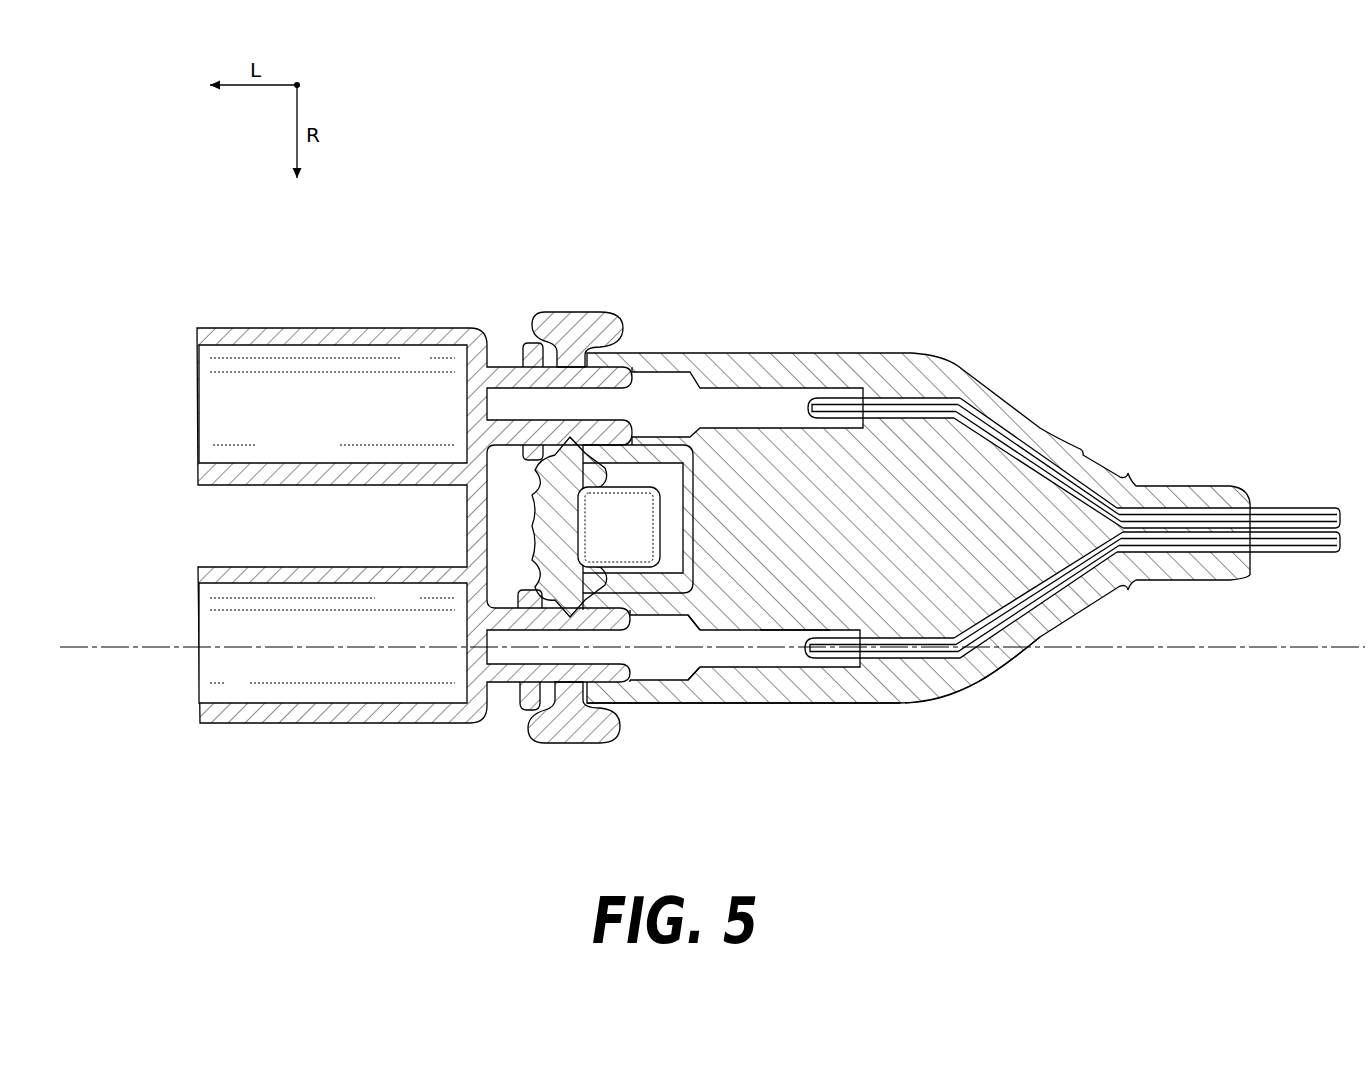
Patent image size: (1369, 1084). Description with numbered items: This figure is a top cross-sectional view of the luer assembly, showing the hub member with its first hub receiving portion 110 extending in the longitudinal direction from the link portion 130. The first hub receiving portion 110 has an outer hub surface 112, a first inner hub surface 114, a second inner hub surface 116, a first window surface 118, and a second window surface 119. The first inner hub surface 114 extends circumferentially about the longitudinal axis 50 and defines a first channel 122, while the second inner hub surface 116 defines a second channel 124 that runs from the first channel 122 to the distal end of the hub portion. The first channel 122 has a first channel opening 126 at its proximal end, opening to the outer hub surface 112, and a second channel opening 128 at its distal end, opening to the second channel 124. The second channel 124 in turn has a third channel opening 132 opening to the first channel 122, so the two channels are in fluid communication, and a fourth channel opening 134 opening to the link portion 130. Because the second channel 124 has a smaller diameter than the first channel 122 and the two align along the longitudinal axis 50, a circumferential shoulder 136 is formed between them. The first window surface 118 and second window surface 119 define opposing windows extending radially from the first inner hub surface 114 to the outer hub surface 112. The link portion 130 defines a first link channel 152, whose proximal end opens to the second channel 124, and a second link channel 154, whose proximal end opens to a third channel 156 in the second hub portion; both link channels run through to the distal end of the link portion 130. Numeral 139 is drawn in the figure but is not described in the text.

The longitudinal axis 50 is at (115, 642).
The first hub receiving portion 110 is at (801, 708).
The outer hub surface 112 is at (755, 705).
The first inner hub surface 114 is at (653, 682).
The second inner hub surface 116 is at (847, 667).
The first window surface 118 is at (522, 688).
The second window surface 119 is at (519, 600).
The first channel 122 is at (654, 632).
The second channel 124 is at (792, 636).
The first channel opening 126 is at (522, 706).
The second channel opening 128 is at (687, 625).
The link portion 130 is at (1018, 663).
The third channel opening 132 is at (700, 628).
The fourth channel opening 134 is at (862, 630).
The shoulder 136 is at (692, 664).
The valve member 139 is at (536, 585).
The first link channel 152 is at (1065, 588).
The second link channel 154 is at (1025, 449).
The third channel 156 is at (782, 399).